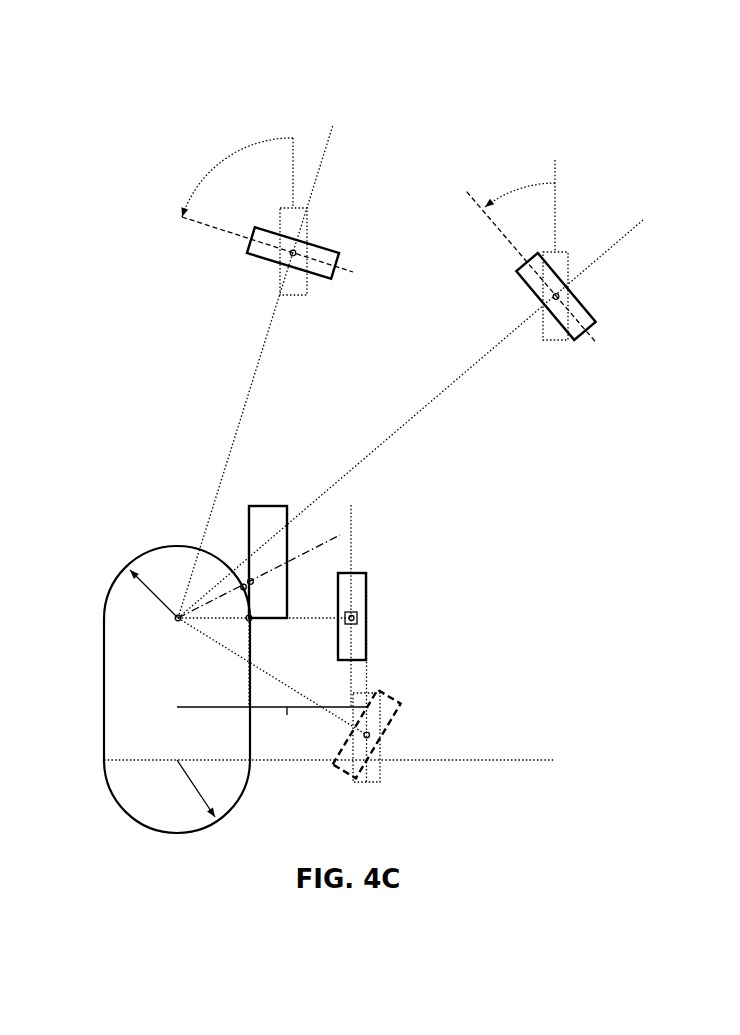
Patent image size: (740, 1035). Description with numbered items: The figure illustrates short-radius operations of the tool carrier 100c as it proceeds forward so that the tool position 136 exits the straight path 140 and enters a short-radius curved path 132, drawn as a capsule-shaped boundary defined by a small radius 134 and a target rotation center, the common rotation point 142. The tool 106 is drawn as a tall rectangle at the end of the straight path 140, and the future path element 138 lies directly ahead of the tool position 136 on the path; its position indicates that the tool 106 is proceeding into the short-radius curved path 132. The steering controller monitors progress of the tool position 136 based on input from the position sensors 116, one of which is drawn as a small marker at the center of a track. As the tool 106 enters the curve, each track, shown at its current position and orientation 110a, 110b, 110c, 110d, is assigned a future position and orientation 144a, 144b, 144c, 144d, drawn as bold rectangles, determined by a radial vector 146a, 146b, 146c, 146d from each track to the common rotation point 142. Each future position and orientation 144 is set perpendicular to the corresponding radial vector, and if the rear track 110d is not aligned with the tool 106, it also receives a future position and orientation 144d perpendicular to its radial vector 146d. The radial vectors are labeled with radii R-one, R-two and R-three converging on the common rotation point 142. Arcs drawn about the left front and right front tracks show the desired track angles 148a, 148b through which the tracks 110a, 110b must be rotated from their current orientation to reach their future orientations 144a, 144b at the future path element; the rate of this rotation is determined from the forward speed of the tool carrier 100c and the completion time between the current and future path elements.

The tool carrier 100c is at (88, 55).
The tool 106 is at (268, 505).
The track 110a is at (283, 208).
The track 110b is at (562, 251).
The track 110c is at (392, 606).
The rear track 110d is at (383, 770).
The position sensors 116 is at (368, 622).
The short-radius curved path 132 is at (238, 797).
The small radius 134 is at (153, 598).
The tool position 136 is at (247, 628).
The future path element 138 is at (254, 583).
The straight path 140 is at (248, 697).
The common rotation point 142 is at (176, 622).
The future position and orientation 144 is at (243, 590).
The future position and orientation 144a is at (333, 242).
The future position and orientation 144b is at (590, 308).
The future position and orientation 144c is at (368, 603).
The future position and orientation 144d is at (383, 690).
The radial vector 146a is at (255, 372).
The radial vector 146b is at (478, 360).
The radial vector 146c is at (332, 620).
The radial vector 146d is at (270, 680).
The desired track angle 148a is at (208, 175).
The desired track angle 148b is at (517, 190).